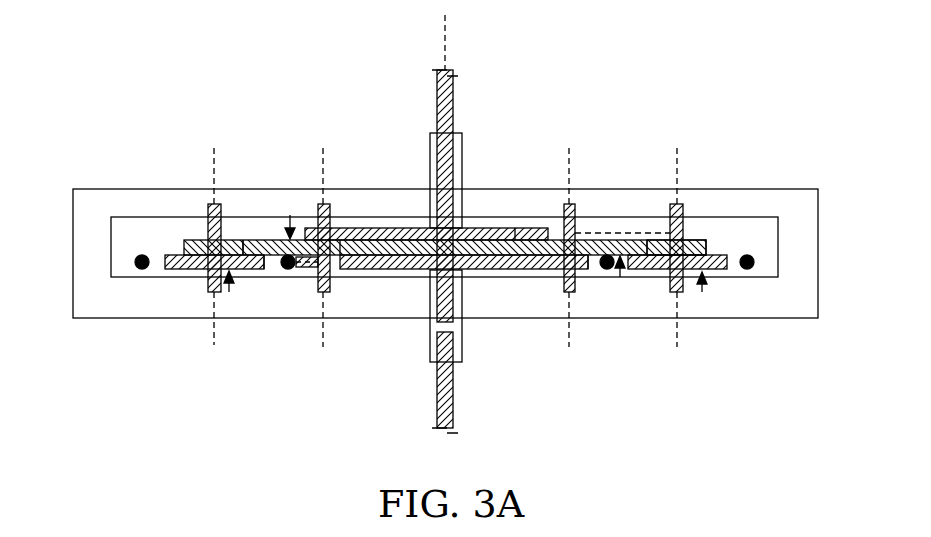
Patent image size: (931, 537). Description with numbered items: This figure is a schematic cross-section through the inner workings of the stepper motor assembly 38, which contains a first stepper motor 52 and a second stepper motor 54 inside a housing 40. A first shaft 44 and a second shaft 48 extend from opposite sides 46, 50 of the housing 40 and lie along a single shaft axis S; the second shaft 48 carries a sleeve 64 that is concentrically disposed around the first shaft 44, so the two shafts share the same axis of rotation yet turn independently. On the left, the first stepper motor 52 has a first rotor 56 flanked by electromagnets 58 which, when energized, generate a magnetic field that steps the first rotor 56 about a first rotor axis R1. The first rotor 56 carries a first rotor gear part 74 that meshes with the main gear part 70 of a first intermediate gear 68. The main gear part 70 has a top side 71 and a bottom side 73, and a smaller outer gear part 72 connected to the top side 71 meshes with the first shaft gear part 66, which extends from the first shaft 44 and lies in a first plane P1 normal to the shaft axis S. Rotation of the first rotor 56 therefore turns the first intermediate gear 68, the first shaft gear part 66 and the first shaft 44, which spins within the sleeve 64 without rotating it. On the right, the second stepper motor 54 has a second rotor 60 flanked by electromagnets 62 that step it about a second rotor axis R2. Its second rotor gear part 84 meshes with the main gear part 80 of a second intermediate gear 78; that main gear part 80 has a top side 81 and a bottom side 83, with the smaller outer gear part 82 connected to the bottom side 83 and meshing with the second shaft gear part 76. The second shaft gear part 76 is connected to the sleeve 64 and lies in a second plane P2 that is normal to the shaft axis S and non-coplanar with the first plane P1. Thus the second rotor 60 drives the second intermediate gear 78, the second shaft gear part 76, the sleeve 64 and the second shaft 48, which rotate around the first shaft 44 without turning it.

The stepper motor assembly 38 is at (758, 152).
The housing 40 is at (793, 189).
The first shaft 44 is at (453, 105).
The first side of the housing 46 is at (413, 189).
The second shaft 48 is at (437, 410).
The second side of the housing 50 is at (88, 318).
The first stepper motor 52 is at (229, 292).
The second stepper motor 54 is at (702, 293).
The first rotor 56 is at (168, 272).
The electromagnets 58 is at (134, 262).
The second rotor 60 is at (725, 271).
The electromagnets 62 is at (607, 270).
The sleeve 64 is at (462, 350).
The first shaft gear part 66 is at (390, 228).
The first intermediate gear 68 is at (290, 215).
The main gear part 70 is at (275, 240).
The top side 71 is at (245, 240).
The outer gear part 72 is at (334, 228).
The bottom side 73 is at (268, 272).
The first rotor gear part 74 is at (188, 240).
The second shaft gear part 76 is at (548, 271).
The second intermediate gear 78 is at (620, 278).
The main gear part 80 is at (515, 228).
The top side 81 is at (650, 242).
The outer gear part 82 is at (561, 233).
The bottom side 83 is at (598, 273).
The second rotor gear part 84 is at (688, 233).
The shaft axis S is at (448, 38).
The first plane P1 is at (587, 233).
The second plane P2 is at (332, 290).
The first rotor axis R1 is at (214, 345).
The second rotor axis R2 is at (677, 342).